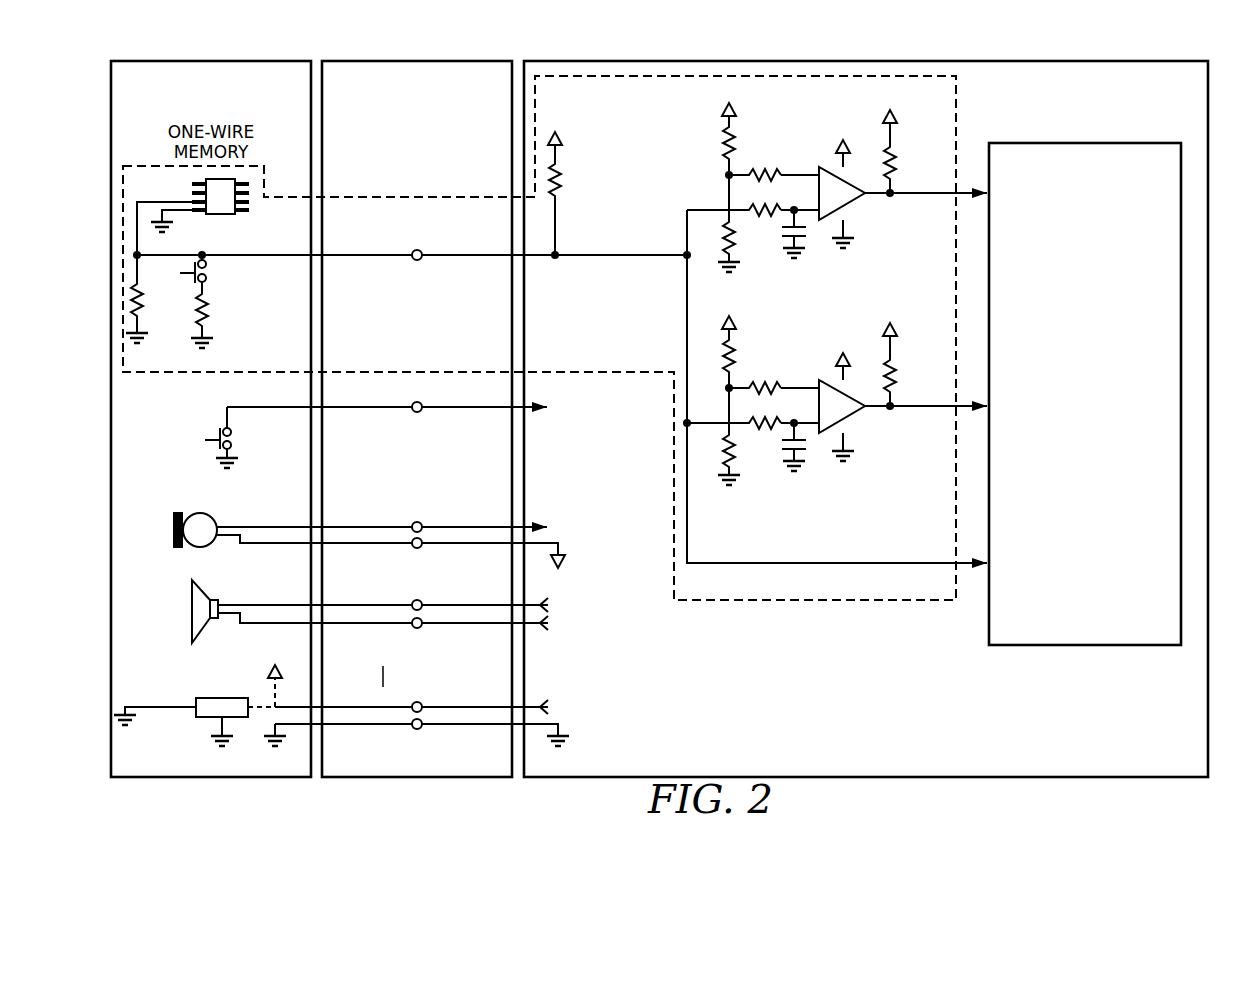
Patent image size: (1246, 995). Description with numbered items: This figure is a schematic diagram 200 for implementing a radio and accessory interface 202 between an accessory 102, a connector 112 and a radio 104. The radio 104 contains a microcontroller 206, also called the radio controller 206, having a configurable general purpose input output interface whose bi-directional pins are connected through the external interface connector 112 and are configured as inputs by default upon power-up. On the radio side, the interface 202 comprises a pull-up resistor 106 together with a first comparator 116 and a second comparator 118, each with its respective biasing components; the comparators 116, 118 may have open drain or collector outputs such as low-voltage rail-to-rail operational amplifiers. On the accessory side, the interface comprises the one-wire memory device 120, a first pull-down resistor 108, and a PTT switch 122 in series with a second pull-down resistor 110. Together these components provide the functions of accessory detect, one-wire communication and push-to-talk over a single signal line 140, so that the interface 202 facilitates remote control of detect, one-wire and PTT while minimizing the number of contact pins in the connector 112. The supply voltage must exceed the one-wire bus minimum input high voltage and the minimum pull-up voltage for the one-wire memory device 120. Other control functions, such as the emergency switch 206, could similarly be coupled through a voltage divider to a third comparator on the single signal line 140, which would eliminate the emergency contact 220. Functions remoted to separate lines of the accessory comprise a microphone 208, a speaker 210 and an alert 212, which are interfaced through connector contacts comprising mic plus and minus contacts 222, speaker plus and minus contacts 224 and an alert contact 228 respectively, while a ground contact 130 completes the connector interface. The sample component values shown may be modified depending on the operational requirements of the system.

The schematic diagram 200 is at (677, 421).
The accessory 102 is at (298, 61).
The connector 112 is at (496, 61).
The radio 104 is at (1162, 61).
The microcontroller 206 is at (1140, 143).
The radio and accessory interface 202 is at (958, 125).
The one-wire memory device 120 is at (222, 215).
The single signal line 140 is at (417, 262).
The pull-down resistor R2 108 is at (140, 320).
The PTT switch 122 is at (196, 264).
The pull-down resistor R3 110 is at (205, 325).
The pull-up resistor R1 106 is at (560, 165).
The first comparator 116 is at (814, 147).
The second comparator 118 is at (814, 360).
The emergency contact 220 is at (422, 404).
The microphone 208 is at (262, 525).
The mic+/- contacts 222 is at (421, 524).
The speaker 210 is at (262, 603).
The speaker+/- contacts 224 is at (421, 602).
The alert 212 is at (222, 697).
The alert contact 228 is at (455, 705).
The ground connector pin 130 is at (422, 728).